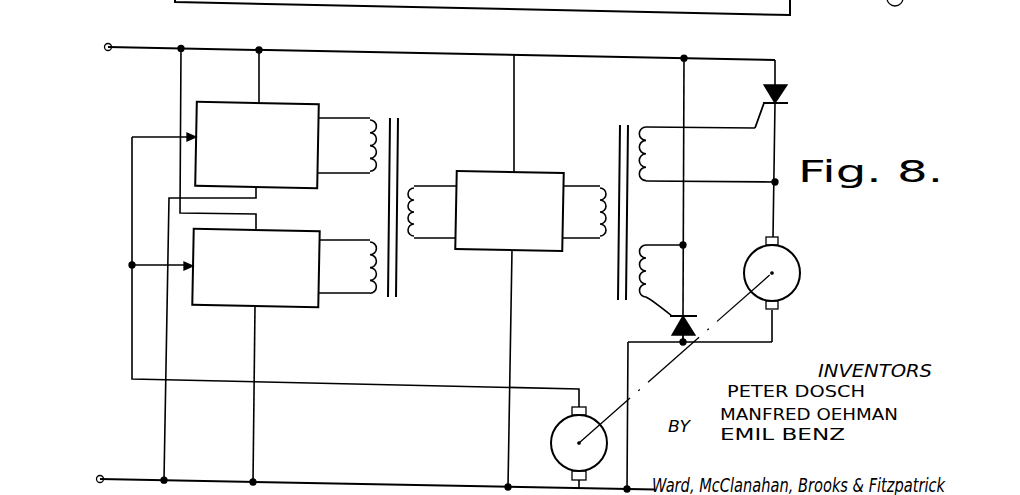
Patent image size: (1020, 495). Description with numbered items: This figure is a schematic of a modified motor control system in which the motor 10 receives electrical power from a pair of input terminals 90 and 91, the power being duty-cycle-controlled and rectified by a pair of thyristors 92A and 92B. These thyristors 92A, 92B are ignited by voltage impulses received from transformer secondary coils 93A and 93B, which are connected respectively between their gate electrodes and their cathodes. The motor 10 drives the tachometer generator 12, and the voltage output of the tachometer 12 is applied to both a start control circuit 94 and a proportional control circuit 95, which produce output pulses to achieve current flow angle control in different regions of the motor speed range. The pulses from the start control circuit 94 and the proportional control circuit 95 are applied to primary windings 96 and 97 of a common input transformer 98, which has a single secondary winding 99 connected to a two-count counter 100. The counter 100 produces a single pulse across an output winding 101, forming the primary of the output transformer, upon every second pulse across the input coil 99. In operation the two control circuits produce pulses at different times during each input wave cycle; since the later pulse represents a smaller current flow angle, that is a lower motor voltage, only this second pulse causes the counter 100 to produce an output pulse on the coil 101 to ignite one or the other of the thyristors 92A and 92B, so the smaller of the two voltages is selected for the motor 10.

The motor 10 is at (797, 262).
The tachometer generator 12 is at (555, 432).
The input terminal 90 is at (112, 44).
The input terminal 91 is at (104, 476).
The thyristor 92A is at (785, 92).
The thyristor 92B is at (685, 283).
The transformer secondary coil 93A is at (653, 137).
The transformer secondary coil 93B is at (655, 248).
The start control circuit 94 is at (620, 128).
The proportional control circuit 95 is at (313, 106).
The primary winding 96 is at (378, 118).
The primary winding 97 is at (357, 286).
The common input transformer 98 is at (415, 126).
The secondary winding 99 is at (434, 234).
The two-count counter 100 is at (552, 173).
The output winding 101 is at (592, 233).